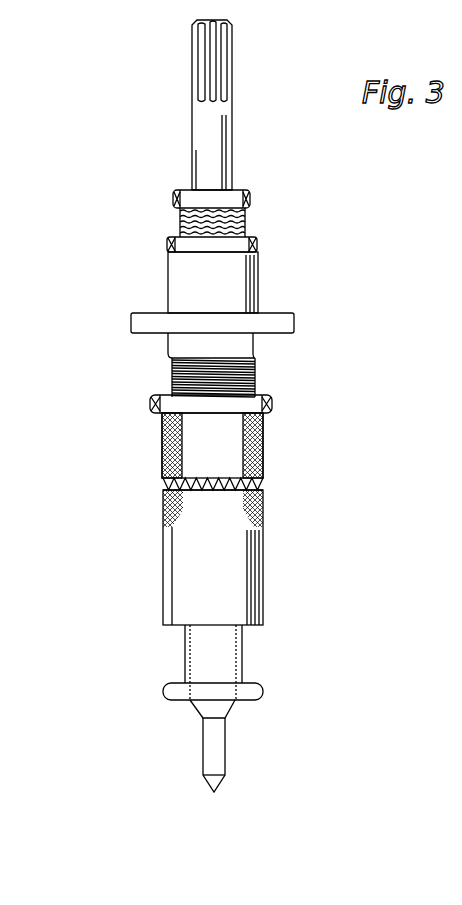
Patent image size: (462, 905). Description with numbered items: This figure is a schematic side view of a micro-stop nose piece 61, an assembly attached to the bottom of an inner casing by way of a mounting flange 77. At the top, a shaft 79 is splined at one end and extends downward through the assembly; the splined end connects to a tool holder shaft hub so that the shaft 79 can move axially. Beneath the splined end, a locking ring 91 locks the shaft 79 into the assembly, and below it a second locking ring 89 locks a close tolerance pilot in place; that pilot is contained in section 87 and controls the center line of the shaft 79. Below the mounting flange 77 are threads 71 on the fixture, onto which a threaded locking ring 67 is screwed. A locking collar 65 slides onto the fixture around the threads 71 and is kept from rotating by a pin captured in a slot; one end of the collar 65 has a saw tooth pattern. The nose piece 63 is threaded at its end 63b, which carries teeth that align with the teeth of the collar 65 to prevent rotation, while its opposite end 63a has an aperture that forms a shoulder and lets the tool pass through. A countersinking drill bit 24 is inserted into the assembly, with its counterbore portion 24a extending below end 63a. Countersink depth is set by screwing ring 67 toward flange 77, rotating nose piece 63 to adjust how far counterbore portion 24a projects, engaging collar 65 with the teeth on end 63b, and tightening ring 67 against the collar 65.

The micro-stop nose piece 61 is at (105, 313).
The shaft 79 is at (233, 123).
The locking ring 91 is at (252, 200).
The locking ring 89 is at (258, 246).
The section 87 is at (259, 288).
The mounting flange 77 is at (286, 336).
The threads 71 is at (172, 373).
The locking ring 67 is at (273, 405).
The locking collar 65 is at (160, 433).
The threaded end of nose piece 63b is at (264, 498).
The nose piece 63 is at (264, 558).
The end of nose piece 63a is at (264, 692).
The counterbore portion 24a is at (233, 706).
The countersinking drill bit 24 is at (226, 765).